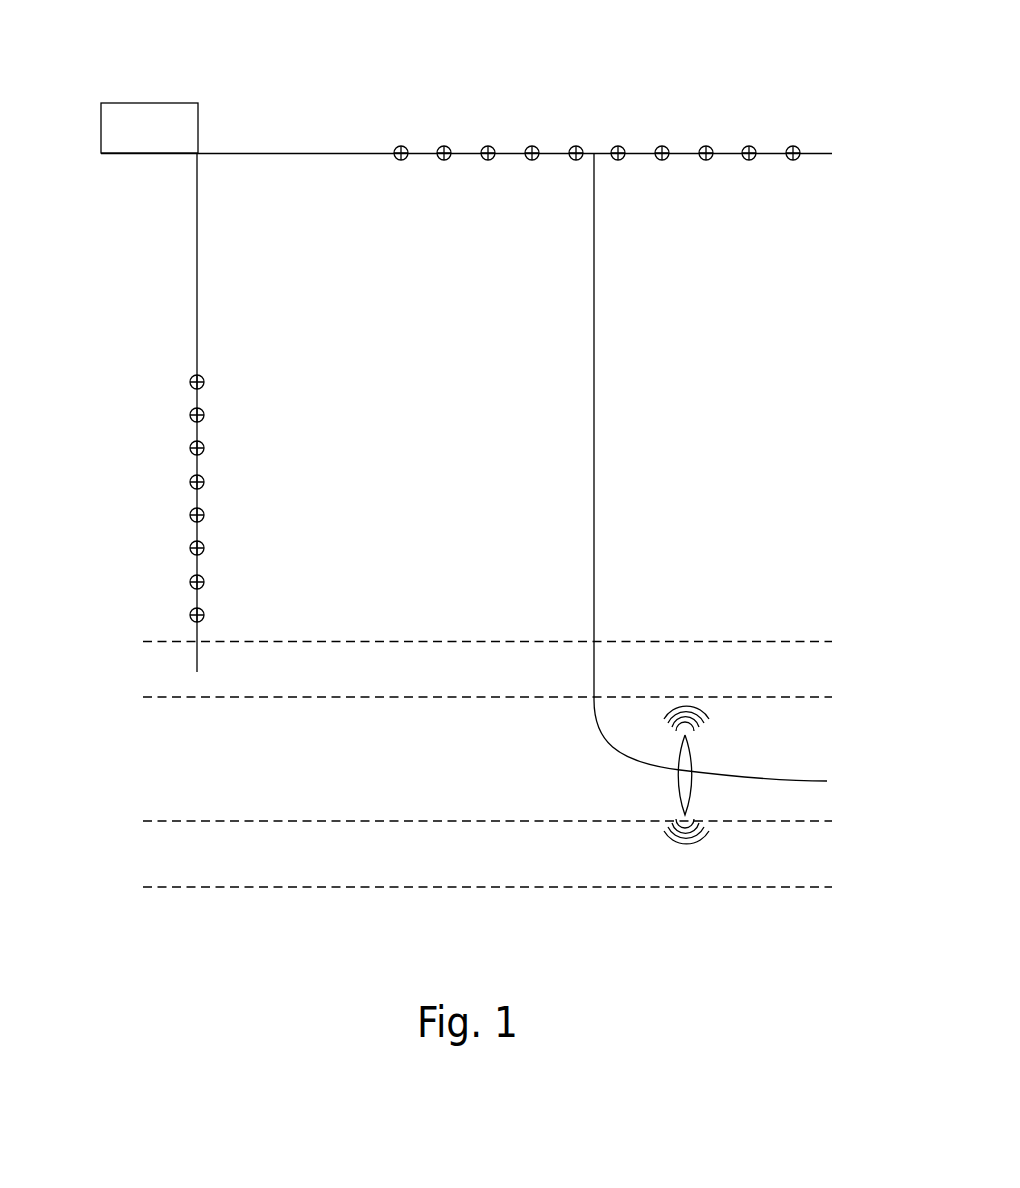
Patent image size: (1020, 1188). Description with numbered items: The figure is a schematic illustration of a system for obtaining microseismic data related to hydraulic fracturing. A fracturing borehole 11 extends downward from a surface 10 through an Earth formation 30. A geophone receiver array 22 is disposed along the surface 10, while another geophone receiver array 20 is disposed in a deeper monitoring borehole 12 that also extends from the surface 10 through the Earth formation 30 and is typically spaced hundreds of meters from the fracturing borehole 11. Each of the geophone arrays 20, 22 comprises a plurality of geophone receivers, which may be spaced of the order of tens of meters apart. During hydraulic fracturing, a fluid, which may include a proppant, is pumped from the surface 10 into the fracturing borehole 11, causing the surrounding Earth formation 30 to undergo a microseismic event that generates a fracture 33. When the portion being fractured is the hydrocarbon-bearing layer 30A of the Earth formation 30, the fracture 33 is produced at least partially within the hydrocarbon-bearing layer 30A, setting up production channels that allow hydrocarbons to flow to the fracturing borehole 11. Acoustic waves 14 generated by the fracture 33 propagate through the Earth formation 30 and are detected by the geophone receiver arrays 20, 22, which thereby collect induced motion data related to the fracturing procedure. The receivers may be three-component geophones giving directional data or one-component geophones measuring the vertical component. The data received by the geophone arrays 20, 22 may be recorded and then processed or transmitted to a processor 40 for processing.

The processor 40 is at (145, 103).
The surface 10 is at (281, 153).
The monitoring borehole 12 is at (198, 260).
The fracturing borehole 11 is at (596, 345).
The geophone receiver array 22 is at (576, 146).
The geophone receiver array 20 is at (204, 382).
The fracture 33 is at (690, 766).
The acoustic waves 14 is at (673, 705).
The hydrocarbon-bearing layer 30A is at (391, 770).
The Earth formation 30 is at (150, 293).